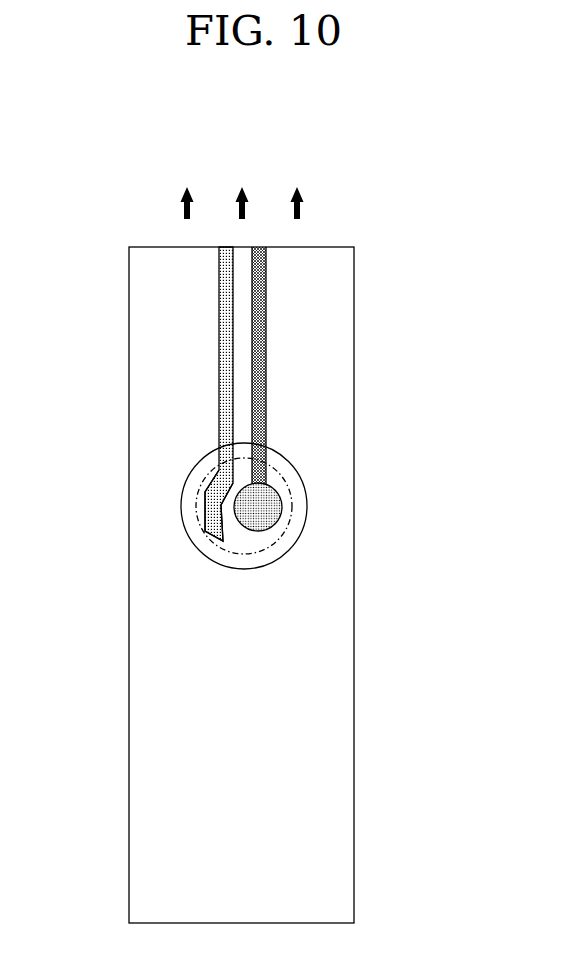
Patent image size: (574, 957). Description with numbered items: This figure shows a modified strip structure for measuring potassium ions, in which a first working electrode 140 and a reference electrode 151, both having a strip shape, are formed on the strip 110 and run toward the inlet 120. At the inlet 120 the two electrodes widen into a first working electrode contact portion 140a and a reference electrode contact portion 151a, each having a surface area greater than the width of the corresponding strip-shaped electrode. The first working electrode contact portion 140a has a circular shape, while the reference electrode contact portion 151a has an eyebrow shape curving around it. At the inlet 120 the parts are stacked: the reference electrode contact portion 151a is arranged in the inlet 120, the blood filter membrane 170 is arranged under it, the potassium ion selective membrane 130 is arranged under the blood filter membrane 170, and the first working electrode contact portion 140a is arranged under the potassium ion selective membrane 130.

The strip 110 is at (148, 640).
The inlet 120 is at (243, 536).
The potassium ion selective membrane 130 is at (284, 527).
The first working electrode 140 is at (339, 389).
The first working electrode contact portion 140a is at (282, 504).
The reference electrode 151 is at (138, 394).
The reference electrode contact portion 151a is at (206, 497).
The blood filter membrane 170 is at (288, 553).